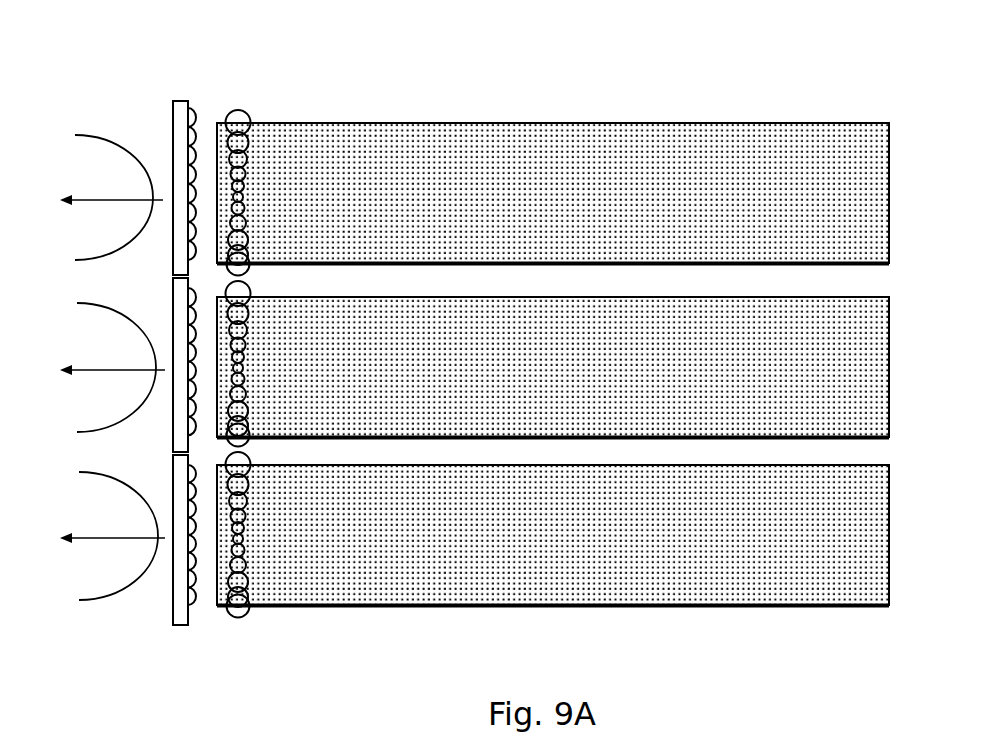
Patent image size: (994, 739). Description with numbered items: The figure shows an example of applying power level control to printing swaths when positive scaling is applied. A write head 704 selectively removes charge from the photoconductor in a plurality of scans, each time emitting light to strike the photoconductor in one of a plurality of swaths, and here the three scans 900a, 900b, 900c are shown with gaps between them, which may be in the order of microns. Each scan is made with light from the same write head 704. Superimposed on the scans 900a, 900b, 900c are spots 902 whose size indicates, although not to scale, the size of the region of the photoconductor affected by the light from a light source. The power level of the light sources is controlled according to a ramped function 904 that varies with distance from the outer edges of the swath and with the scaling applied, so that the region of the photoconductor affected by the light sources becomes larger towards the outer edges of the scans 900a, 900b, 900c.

The write head 704 is at (183, 78).
The spots 902 is at (237, 628).
The ramped function 904 is at (97, 628).
The scan 900a is at (857, 246).
The scan 900b is at (863, 424).
The scan 900c is at (861, 598).